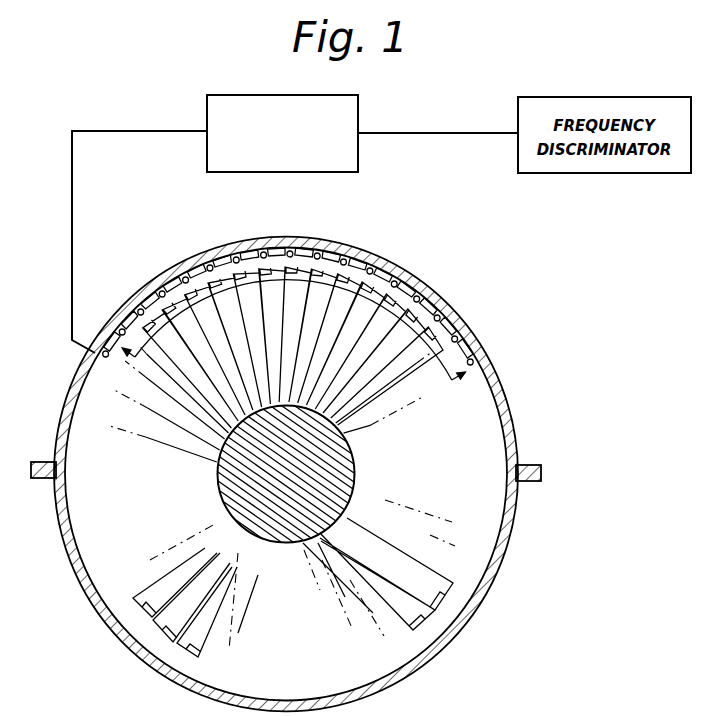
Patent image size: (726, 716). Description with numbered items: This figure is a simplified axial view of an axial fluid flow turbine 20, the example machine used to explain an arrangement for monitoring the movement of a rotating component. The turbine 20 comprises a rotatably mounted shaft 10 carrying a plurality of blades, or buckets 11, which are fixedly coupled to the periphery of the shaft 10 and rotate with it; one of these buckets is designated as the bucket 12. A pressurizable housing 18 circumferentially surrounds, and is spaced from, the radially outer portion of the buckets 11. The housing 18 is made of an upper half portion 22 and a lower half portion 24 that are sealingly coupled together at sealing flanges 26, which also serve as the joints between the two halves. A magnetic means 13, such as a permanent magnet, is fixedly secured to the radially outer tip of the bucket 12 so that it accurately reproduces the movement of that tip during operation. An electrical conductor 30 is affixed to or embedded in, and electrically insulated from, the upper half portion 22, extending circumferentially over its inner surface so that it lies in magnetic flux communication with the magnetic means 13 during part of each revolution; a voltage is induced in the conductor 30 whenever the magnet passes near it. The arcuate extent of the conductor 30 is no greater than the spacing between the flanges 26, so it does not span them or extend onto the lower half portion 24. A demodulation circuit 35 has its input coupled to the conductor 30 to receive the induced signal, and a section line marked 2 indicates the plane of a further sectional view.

The section line 2- 2 is at (452, 283).
The shaft 10 is at (356, 469).
The buckets 11 is at (289, 431).
The bucket 12 is at (275, 364).
The magnetic means 13 is at (289, 303).
The pressurizable housing 18 is at (312, 469).
The axial fluid flow turbine 20 is at (507, 363).
The upper half portion 22 is at (517, 437).
The lower half portion 24 is at (512, 540).
The sealing flanges 26 is at (45, 462).
The electrical conductor 30 is at (288, 308).
The demodulation circuit 35 is at (362, 101).